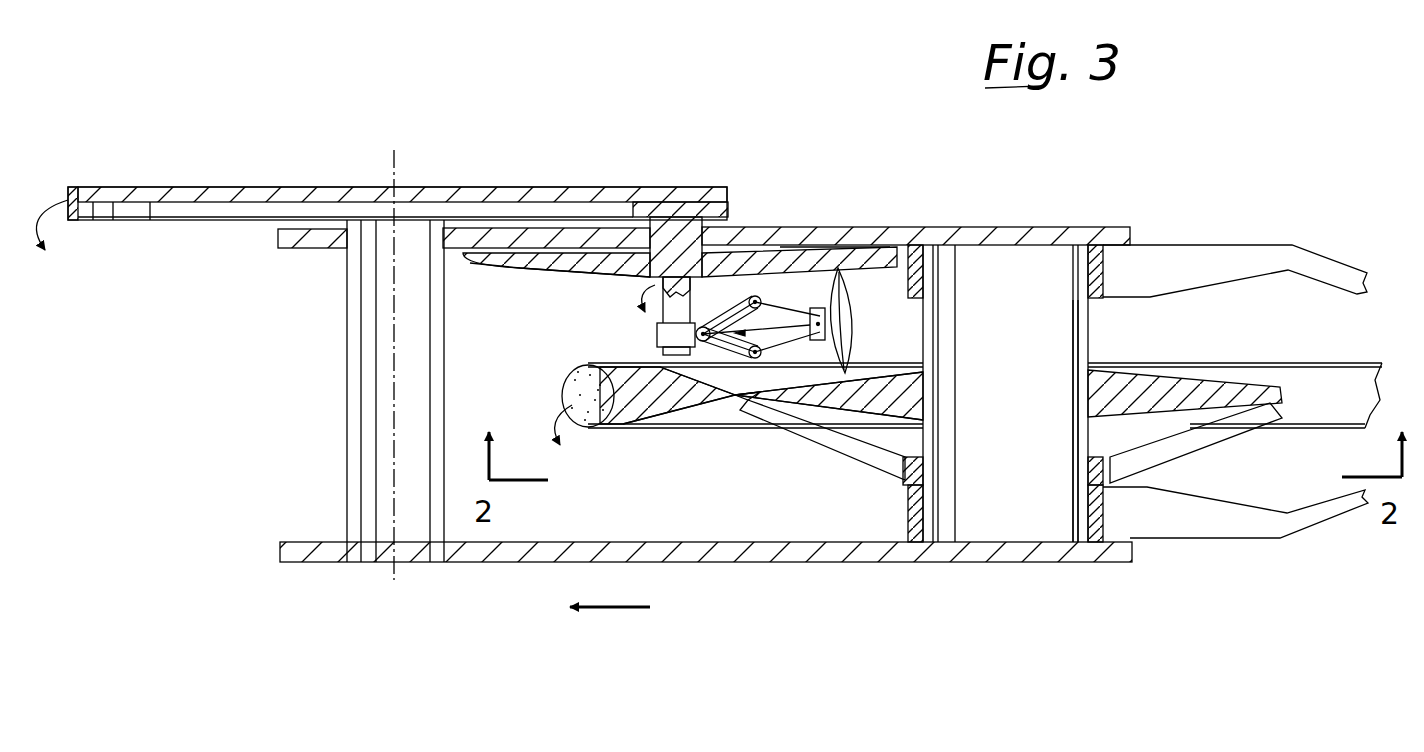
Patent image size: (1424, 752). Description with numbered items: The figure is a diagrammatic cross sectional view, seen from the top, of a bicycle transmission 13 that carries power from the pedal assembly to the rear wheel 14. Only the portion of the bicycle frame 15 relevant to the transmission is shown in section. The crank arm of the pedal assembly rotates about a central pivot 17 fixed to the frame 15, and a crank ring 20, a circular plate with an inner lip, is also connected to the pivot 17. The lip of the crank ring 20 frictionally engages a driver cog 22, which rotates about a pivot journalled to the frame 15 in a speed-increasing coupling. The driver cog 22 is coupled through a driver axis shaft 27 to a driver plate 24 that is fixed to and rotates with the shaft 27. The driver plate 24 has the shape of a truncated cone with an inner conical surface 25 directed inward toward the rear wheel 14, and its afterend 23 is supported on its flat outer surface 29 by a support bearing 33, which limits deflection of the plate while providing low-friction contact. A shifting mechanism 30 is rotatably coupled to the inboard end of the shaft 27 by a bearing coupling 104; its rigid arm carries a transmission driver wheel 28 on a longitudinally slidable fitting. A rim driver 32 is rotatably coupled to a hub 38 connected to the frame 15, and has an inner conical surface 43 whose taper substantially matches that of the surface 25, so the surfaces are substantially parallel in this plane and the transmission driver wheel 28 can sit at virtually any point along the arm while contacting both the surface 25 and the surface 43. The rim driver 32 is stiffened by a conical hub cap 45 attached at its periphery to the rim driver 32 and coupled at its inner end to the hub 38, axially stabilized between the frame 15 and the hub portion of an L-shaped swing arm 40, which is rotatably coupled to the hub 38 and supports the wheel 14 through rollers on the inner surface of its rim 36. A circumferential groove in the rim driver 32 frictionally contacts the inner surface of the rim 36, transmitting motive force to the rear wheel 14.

The transmission 13 is at (580, 133).
The rear wheel 14 is at (570, 373).
The bicycle frame 15 is at (1108, 227).
The central pivot 17 is at (375, 560).
The crank ring 20 is at (572, 186).
The driver cog 22 is at (690, 187).
The afterend of driver plate 23 is at (905, 232).
The driver plate 24 is at (555, 262).
The inner conical surface 25 is at (525, 272).
The driver axis shaft 27 is at (677, 300).
The transmission driver wheel 28 is at (852, 265).
The outer surface of driver plate 29 is at (815, 245).
The shifting mechanism 30 is at (768, 300).
The rim driver 32 is at (1150, 400).
The support bearing 33 is at (867, 255).
The rim 36 is at (750, 405).
The hub 38 is at (1063, 545).
The swing arm 40 is at (1312, 245).
The inner conical surface of rim driver 43 is at (1226, 378).
The conical hub cap 45 is at (860, 455).
The bearing coupling 104 is at (655, 332).